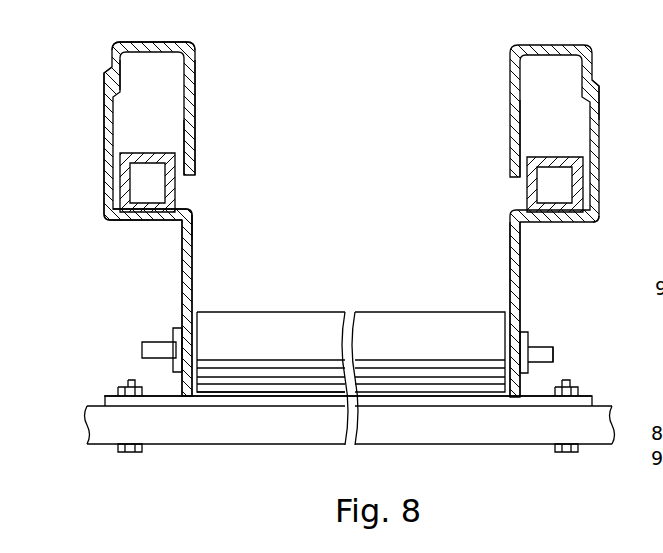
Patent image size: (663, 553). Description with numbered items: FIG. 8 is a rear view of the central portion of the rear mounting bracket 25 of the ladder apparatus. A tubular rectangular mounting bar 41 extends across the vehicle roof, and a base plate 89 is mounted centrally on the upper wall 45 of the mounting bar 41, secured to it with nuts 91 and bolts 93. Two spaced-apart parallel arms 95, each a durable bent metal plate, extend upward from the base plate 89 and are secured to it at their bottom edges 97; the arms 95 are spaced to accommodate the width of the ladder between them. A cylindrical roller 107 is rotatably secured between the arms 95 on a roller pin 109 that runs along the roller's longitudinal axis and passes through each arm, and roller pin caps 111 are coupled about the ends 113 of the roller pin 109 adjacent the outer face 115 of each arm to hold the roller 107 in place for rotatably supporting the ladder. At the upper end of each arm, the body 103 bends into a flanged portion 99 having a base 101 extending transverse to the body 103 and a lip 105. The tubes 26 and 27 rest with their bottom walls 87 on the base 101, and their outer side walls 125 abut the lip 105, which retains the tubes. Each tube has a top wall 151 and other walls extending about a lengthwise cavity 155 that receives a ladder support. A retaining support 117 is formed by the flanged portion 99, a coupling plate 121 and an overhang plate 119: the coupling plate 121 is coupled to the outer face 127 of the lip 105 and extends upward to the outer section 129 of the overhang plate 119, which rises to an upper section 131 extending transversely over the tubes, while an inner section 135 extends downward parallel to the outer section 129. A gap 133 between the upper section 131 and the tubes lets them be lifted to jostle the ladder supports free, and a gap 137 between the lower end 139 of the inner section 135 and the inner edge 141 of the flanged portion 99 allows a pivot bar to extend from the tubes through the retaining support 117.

The rear mounting bracket 25 is at (90, 292).
The tube 26 is at (521, 197).
The tube 27 is at (191, 184).
The mounting bar 41 is at (197, 425).
The upper wall 45 is at (230, 405).
The bottom wall 87 is at (662, 195).
The base plate 89 is at (277, 405).
The nut 91 is at (107, 395).
The bolt 93 is at (130, 452).
The arm 95 is at (192, 245).
The bottom edge 97 is at (536, 447).
The flanged portion 99 is at (105, 219).
The base 101 is at (155, 209).
The body 103 is at (182, 271).
The lip 105 is at (120, 189).
The cylindrical roller 107 is at (388, 311).
The roller pin 109 is at (535, 345).
The roller pin cap 111 is at (519, 335).
The end 113 is at (555, 354).
The outer face 115 is at (517, 270).
The retaining support 117 is at (104, 80).
The coupling plate 121 is at (104, 100).
The overhang plate 119 is at (190, 44).
The outer side wall 125 is at (584, 180).
The outer face 127 is at (105, 207).
The outer section 129 is at (112, 50).
The upper section 131 is at (153, 42).
The gap 133 is at (160, 76).
The inner section 135 is at (195, 90).
The gap 137 is at (192, 197).
The lower end 139 is at (192, 137).
The inner edge 141 is at (196, 212).
The top wall 151 is at (538, 159).
The cavity 155 is at (560, 160).